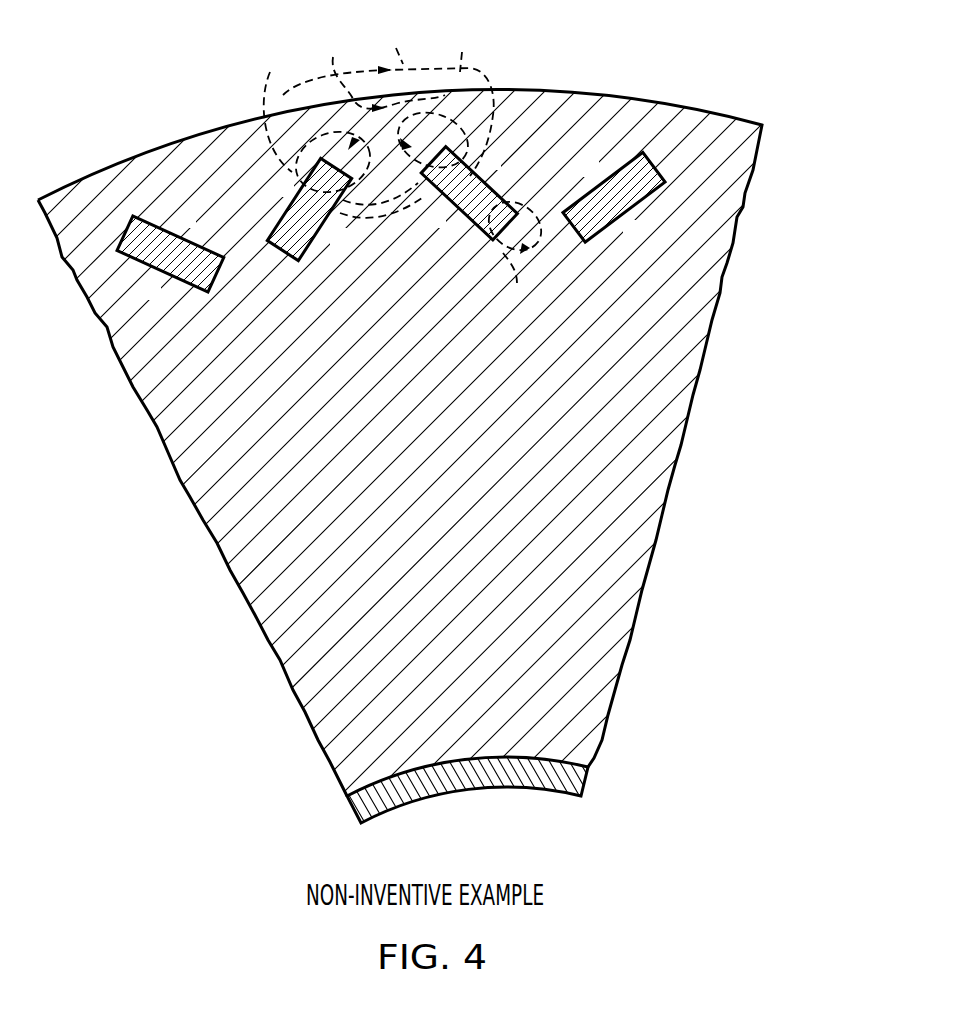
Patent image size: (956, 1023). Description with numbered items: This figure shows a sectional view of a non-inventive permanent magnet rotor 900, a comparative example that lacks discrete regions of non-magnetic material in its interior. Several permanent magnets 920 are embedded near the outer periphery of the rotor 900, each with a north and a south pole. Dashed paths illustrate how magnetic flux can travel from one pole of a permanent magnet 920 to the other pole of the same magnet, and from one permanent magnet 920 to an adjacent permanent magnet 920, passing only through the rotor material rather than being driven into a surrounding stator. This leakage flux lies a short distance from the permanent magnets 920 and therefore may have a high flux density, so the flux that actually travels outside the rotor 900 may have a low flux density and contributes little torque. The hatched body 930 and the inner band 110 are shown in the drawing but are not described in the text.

The permanent magnet rotor 900 is at (478, 432).
The permanent magnet 920 is at (500, 210).
The rotor core 930 is at (652, 470).
The shaft / inner ring 110 is at (463, 786).